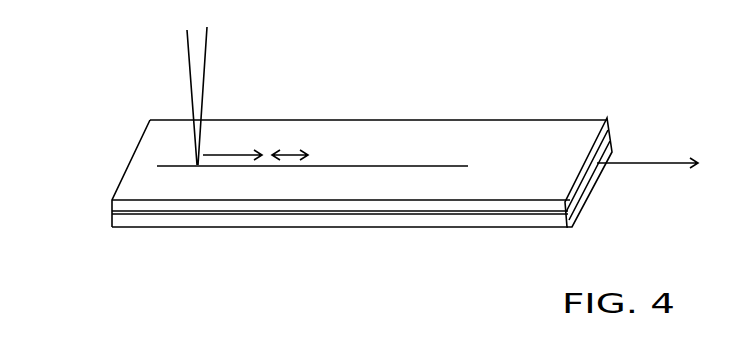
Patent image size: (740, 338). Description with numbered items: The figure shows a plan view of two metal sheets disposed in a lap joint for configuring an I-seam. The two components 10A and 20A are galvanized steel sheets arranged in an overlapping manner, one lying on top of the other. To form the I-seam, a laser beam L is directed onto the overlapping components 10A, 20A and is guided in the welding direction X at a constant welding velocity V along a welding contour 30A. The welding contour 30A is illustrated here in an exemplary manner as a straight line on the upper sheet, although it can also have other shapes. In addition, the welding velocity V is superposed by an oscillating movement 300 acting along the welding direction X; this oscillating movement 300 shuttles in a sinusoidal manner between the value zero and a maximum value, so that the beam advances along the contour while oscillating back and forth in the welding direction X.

The component 10A is at (110, 208).
The component 20A is at (110, 223).
The welding contour 30A is at (357, 165).
The oscillating movement 300 is at (290, 155).
The laser beam L is at (207, 50).
The welding velocity V is at (247, 155).
The welding direction X is at (655, 163).